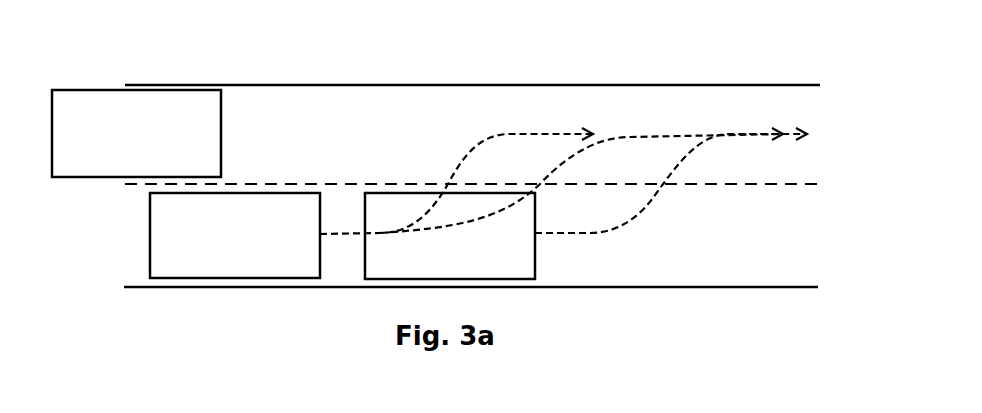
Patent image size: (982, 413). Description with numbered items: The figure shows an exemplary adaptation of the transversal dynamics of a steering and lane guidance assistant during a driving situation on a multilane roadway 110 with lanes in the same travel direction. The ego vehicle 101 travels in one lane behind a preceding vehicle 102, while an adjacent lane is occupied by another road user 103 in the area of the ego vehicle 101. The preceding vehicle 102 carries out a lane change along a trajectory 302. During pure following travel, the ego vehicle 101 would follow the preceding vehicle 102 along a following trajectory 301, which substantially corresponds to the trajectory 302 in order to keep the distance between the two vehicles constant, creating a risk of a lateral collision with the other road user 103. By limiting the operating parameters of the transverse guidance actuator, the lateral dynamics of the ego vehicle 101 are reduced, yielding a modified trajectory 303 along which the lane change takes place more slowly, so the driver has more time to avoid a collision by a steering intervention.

The multilane roadway 110 is at (406, 85).
The other road user 103 is at (215, 122).
The ego vehicle 101 is at (158, 233).
The preceding vehicle 102 is at (529, 252).
The following trajectory 301 is at (474, 150).
The trajectory 302 is at (655, 201).
The modified trajectory 303 is at (646, 137).